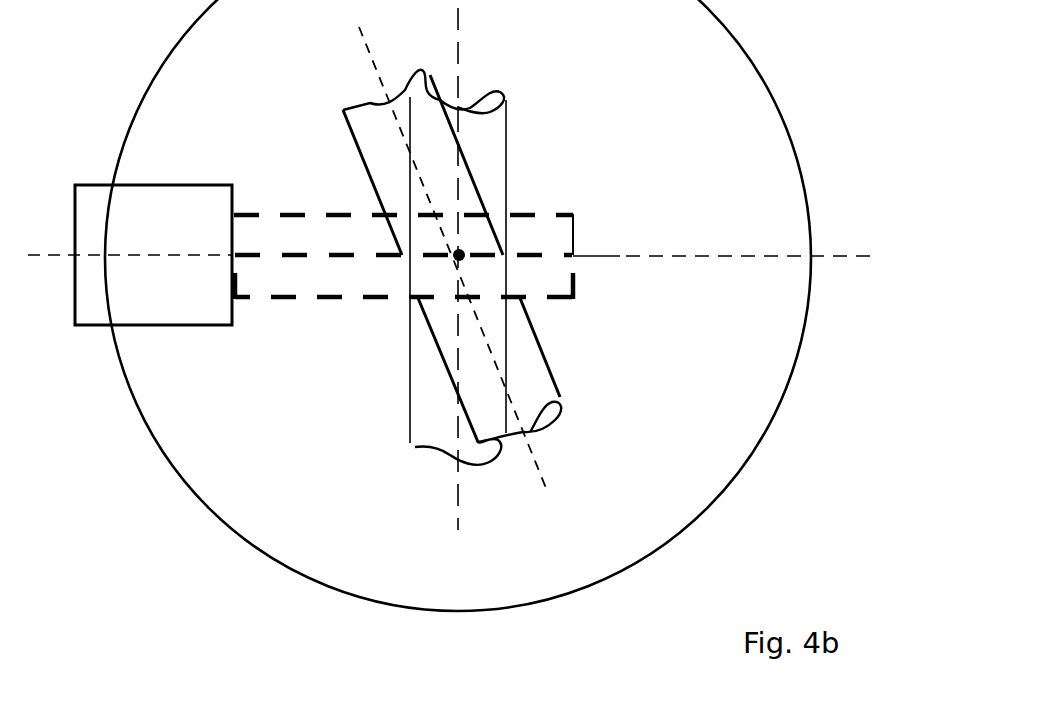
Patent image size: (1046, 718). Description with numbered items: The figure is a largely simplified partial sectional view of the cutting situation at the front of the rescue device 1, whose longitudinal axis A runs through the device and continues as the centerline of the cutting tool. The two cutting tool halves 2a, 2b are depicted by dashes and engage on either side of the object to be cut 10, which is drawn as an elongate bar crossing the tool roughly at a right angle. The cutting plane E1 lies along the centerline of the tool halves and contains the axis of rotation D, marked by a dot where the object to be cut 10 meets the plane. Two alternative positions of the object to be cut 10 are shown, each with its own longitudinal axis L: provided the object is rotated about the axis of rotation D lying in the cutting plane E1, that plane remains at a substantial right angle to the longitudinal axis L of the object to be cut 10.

The rescue device 1 is at (130, 208).
The cutting tool half 2a is at (305, 299).
The cutting tool half 2b is at (305, 230).
The object to be cut 10 is at (427, 385).
The longitudinal axis of the rescue device A is at (167, 257).
The axis of rotation D is at (502, 255).
The cutting plane E1 is at (843, 258).
The longitudinal axis of the object to be cut L is at (377, 68).